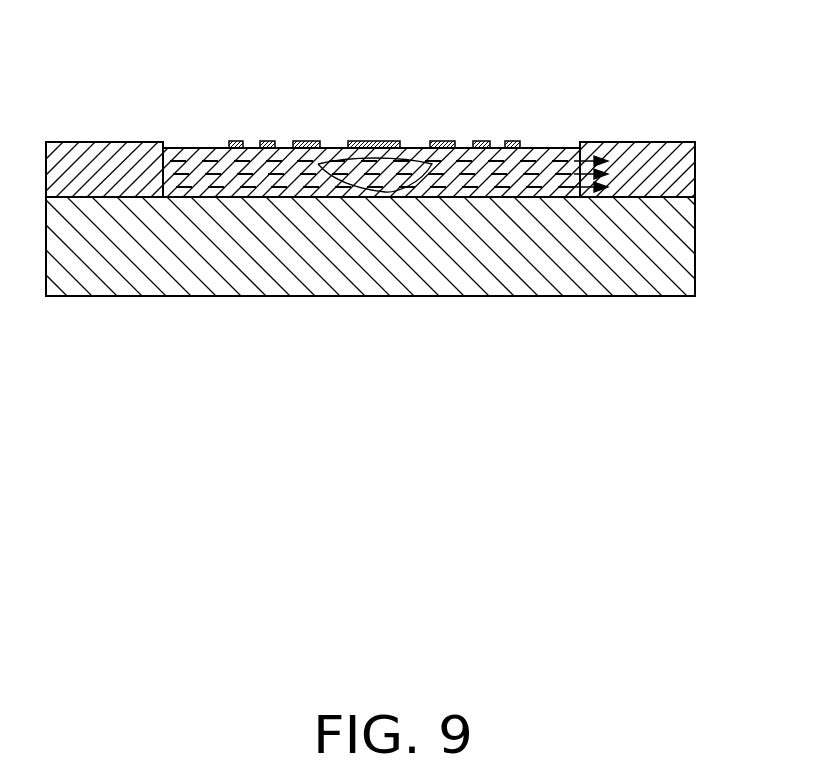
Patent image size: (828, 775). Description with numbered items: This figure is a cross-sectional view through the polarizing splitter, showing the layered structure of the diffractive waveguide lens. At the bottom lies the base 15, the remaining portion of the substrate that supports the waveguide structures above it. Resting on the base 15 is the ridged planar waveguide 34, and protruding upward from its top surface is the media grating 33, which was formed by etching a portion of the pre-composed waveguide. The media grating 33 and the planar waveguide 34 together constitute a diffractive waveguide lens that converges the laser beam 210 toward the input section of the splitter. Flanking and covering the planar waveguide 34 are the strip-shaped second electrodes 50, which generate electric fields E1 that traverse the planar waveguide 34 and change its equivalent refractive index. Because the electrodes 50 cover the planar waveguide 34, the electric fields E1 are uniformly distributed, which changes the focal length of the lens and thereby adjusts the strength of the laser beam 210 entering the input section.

The base 15 is at (532, 240).
The strip-shaped second electrodes 50 is at (100, 163).
The planar waveguide 34 is at (198, 158).
The media grating 33 is at (373, 142).
The laser beam 210 is at (388, 192).
The electric fields E1 is at (554, 87).